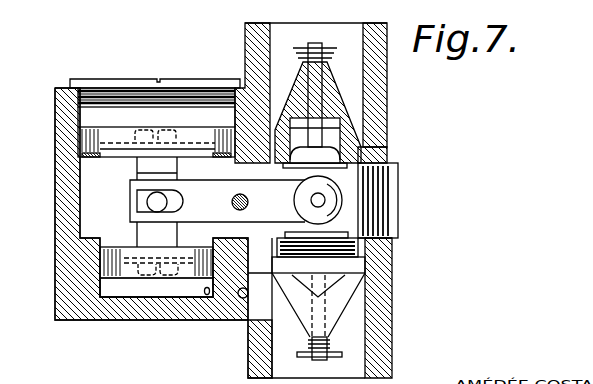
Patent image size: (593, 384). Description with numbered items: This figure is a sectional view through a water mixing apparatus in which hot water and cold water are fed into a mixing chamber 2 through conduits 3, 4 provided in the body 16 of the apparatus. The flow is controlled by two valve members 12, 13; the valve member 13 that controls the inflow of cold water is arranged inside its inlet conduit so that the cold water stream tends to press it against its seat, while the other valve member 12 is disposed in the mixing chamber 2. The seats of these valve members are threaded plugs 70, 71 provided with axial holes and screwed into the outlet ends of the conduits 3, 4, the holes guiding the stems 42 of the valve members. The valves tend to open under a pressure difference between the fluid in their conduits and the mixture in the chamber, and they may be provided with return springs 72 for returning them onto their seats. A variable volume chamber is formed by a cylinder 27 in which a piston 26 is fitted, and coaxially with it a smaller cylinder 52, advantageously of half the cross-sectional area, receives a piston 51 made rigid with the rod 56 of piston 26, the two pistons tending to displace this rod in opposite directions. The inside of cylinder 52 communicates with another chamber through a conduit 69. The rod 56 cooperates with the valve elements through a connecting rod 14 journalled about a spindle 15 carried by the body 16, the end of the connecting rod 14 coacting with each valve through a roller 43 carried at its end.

The mixing chamber 2 is at (350, 175).
The conduit 3 is at (350, 57).
The conduit 4 is at (358, 322).
The valve member 12 is at (360, 148).
The valve member 13 is at (377, 237).
The connecting rod 14 is at (230, 217).
The spindle 15 is at (250, 203).
The body 16 is at (380, 115).
The piston 26 is at (103, 133).
The cylinder 27 is at (85, 117).
The stem 42 is at (330, 355).
The roller 43 is at (340, 210).
The piston 51 is at (130, 270).
The cylinder 52 is at (172, 293).
The rod 56 is at (147, 166).
The conduit 69 is at (243, 298).
The threaded plug 70 is at (347, 107).
The threaded plug 71 is at (357, 263).
The return spring 72 is at (337, 52).